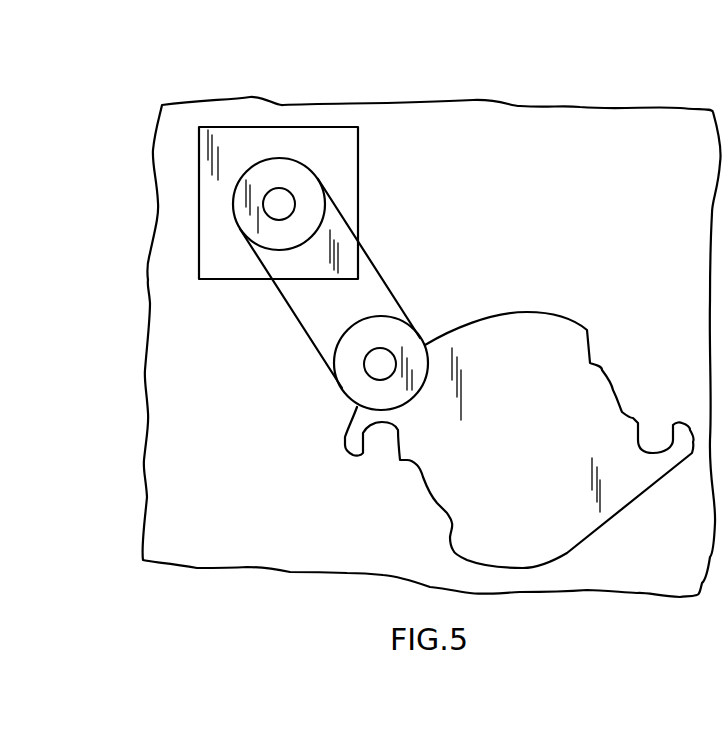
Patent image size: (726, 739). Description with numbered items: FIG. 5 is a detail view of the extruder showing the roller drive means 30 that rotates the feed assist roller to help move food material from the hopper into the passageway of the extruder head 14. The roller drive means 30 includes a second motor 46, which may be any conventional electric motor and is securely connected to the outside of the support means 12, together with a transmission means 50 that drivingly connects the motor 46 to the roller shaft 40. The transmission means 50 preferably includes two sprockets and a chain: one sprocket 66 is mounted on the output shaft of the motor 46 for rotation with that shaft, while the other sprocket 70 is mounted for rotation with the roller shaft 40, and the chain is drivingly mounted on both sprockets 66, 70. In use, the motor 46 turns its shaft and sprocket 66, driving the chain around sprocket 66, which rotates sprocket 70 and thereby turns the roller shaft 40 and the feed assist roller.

The support means 12 is at (690, 175).
The extruder head 14 is at (600, 370).
The roller drive means 30 is at (452, 187).
The roller shaft 40 is at (372, 357).
The motor 46 is at (348, 156).
The transmission means 50 is at (397, 272).
The sprocket 66 is at (270, 167).
The sprocket 70 is at (357, 393).